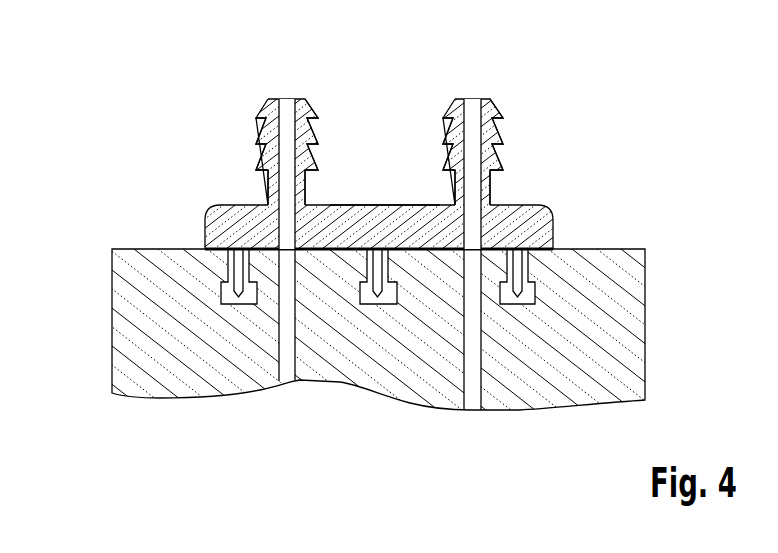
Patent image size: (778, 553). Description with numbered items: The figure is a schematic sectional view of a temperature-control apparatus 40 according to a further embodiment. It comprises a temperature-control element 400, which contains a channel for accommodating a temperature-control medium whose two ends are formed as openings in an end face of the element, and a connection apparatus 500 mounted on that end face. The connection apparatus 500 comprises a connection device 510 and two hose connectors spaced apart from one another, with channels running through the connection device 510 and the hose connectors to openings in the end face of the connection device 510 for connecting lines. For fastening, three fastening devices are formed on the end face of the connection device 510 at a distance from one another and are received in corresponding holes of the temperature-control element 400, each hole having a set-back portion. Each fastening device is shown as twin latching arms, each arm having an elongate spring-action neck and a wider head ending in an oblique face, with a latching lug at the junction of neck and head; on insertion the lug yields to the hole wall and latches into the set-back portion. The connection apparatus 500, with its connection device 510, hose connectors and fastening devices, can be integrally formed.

The temperature-control apparatus 40 is at (185, 103).
The temperature-control element 400 is at (112, 327).
The connection apparatus 500 is at (204, 210).
The connection device 510 is at (373, 206).